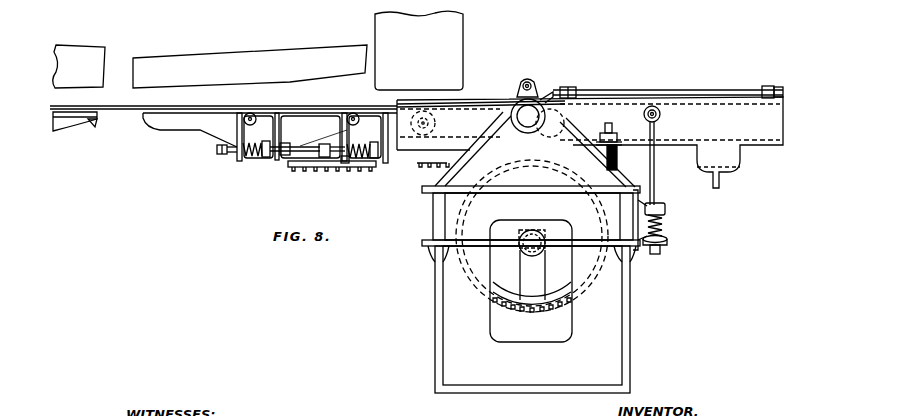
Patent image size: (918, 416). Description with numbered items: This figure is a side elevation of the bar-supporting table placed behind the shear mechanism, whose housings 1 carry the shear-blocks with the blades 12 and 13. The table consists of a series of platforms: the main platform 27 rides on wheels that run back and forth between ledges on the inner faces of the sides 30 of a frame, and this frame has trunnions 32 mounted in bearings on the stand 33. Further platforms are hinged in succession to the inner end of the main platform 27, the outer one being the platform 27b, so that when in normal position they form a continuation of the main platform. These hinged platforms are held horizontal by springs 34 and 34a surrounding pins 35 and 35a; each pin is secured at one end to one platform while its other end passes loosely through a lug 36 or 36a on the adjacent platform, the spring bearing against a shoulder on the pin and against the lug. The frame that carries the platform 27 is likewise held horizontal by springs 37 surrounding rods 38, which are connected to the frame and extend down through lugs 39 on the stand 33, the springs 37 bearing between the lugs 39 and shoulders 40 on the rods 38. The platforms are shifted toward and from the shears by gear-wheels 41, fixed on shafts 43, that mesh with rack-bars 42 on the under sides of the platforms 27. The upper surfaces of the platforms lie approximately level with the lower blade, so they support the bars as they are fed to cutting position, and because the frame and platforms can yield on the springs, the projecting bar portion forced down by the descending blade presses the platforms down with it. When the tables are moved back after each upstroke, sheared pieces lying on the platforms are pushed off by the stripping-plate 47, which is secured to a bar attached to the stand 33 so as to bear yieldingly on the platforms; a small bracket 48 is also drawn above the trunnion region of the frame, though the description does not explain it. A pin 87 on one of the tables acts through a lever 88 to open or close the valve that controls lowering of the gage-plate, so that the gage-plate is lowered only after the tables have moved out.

The housings 1 is at (419, 50).
The blade 12 is at (210, 66).
The blade 13 is at (178, 108).
The main platform 27 is at (580, 113).
The platform 27b is at (99, 119).
The sides of frame 30 is at (590, 142).
The trunnions 32 is at (530, 116).
The stand 33 is at (433, 218).
The spring 34 is at (356, 150).
The spring 34a is at (258, 160).
The pin 35 is at (326, 162).
The pin 35a is at (282, 145).
The lug 36 is at (345, 166).
The lug 36a is at (238, 156).
The springs 37 is at (665, 226).
The rods 38 is at (655, 165).
The lugs 39 is at (667, 207).
The shoulders 40 is at (662, 246).
The gear-wheels 41 is at (541, 320).
The rack-bars 42 is at (360, 168).
The shafts 43 is at (523, 260).
The stripping-plate 47 is at (373, 108).
The bracket 48 is at (534, 83).
The pin 87 is at (615, 91).
The lever 88 is at (577, 91).